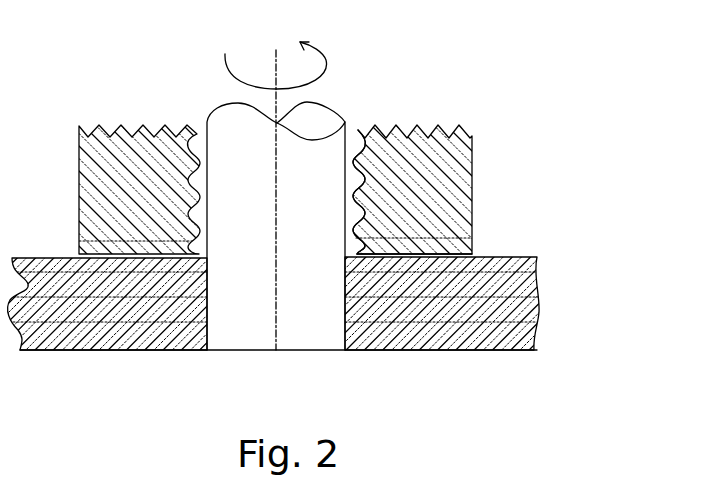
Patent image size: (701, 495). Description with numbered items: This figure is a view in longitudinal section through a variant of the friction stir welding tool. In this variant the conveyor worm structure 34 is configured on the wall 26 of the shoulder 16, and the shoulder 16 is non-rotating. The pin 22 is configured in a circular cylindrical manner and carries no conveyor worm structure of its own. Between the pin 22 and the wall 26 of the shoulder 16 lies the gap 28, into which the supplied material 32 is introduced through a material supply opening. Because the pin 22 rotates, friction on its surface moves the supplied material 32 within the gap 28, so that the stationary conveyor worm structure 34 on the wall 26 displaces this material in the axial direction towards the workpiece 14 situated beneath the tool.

The workpiece 14 is at (463, 315).
The shoulder 16 is at (432, 145).
The pin 22 is at (312, 322).
The wall 26 is at (378, 197).
The gap 28 is at (352, 128).
The supplied material 32 is at (358, 226).
The conveyor worm structure 34 is at (197, 131).